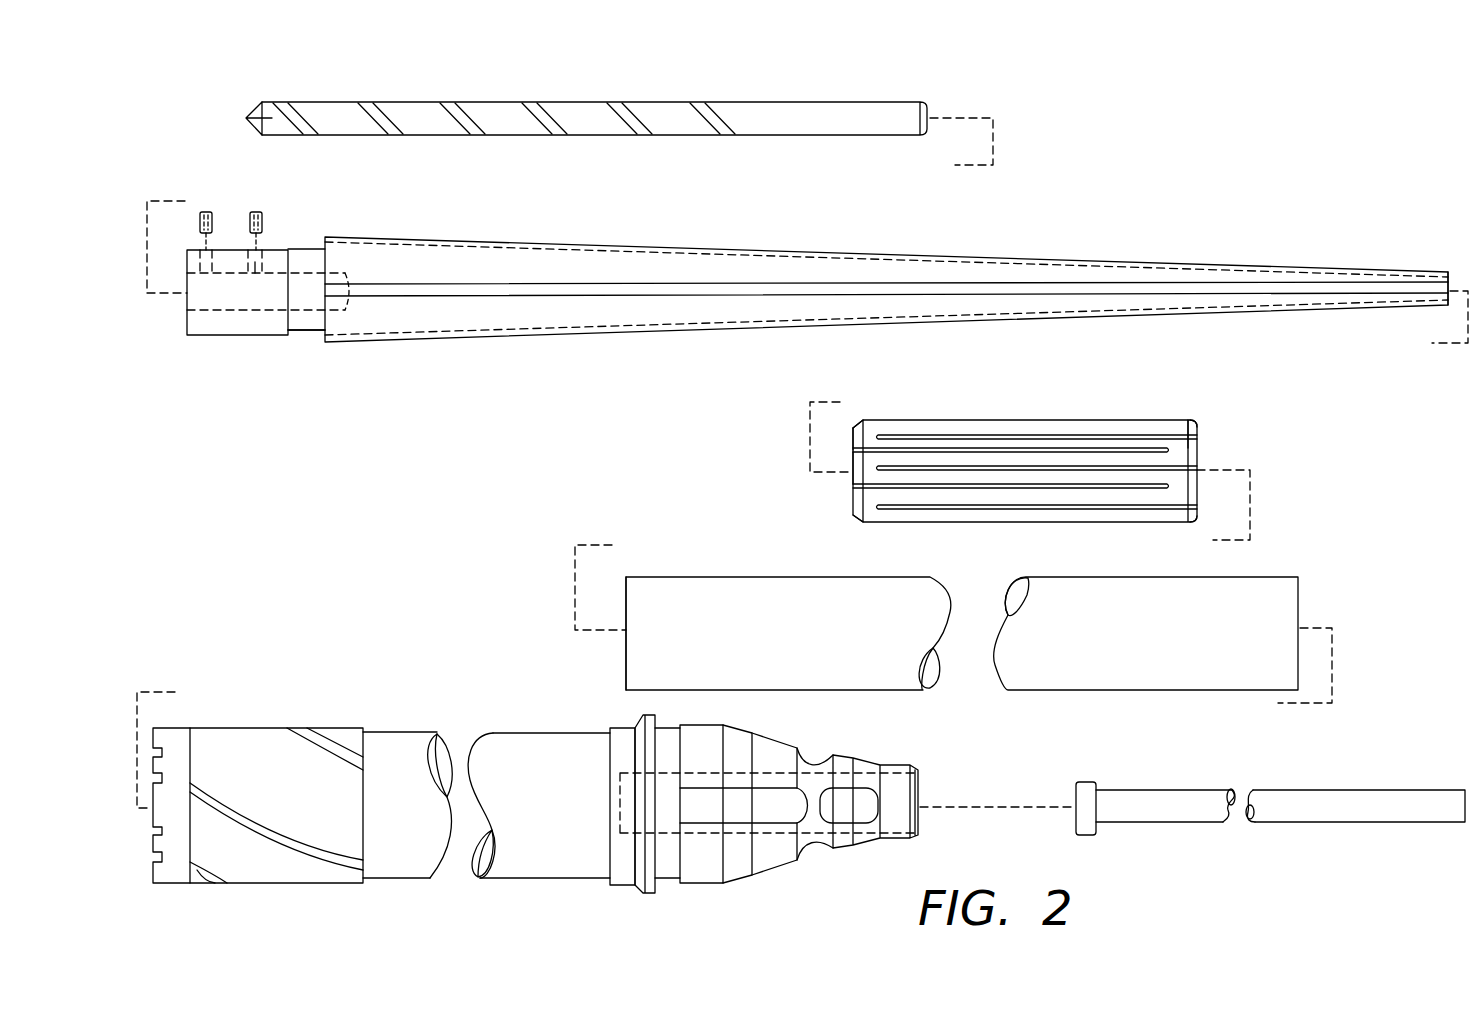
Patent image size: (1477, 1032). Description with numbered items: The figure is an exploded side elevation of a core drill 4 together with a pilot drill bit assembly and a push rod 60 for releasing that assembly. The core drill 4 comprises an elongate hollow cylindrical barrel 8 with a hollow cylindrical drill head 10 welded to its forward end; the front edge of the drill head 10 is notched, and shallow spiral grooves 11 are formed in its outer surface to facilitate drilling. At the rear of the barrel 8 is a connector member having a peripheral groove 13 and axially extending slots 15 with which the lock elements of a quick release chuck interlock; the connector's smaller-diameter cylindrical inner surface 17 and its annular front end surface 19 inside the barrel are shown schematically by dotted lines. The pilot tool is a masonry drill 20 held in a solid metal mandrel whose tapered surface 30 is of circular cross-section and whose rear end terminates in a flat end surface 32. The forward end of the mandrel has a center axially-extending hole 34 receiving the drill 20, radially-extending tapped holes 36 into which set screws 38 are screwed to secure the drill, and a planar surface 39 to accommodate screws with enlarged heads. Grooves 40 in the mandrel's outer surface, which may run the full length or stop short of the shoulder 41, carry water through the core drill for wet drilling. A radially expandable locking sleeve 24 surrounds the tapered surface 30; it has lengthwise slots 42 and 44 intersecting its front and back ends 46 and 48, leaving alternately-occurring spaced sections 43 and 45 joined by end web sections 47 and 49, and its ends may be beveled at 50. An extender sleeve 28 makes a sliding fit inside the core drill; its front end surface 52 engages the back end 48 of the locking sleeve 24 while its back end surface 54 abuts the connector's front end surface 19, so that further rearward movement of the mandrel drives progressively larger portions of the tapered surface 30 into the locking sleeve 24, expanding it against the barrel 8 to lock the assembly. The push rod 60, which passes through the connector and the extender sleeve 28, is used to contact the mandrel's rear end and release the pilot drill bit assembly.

The core drill 4 is at (375, 718).
The barrel 8 is at (397, 732).
The drill head 10 is at (233, 720).
The spiral grooves 11 is at (240, 803).
The peripheral groove 13 is at (810, 757).
The axially extending slots 15 is at (840, 805).
The cylindrical inner surface of connector 17 is at (767, 770).
The front end surface of connector 19 is at (617, 793).
The masonry drill 20 is at (624, 100).
The locking sleeve 24 is at (995, 408).
The extender sleeve 28 is at (614, 642).
The tapered surface 30 is at (650, 214).
The flat end surface 32 is at (1450, 272).
The center axially-extending hole 34 is at (222, 336).
The tapped holes 36 is at (290, 249).
The set screws 38 is at (250, 222).
The planar surface 39 is at (268, 250).
The grooves 40 is at (813, 250).
The shoulder 41 is at (314, 338).
The slots 42 is at (853, 455).
The sleeve sections 43 is at (1060, 458).
The slots 44 is at (1197, 440).
The sleeve sections 45 is at (983, 480).
The front end of locking sleeve 46 is at (853, 437).
The end web section 47 is at (870, 433).
The back end of locking sleeve 48 is at (1197, 497).
The end web section 49 is at (1180, 490).
The beveled ends 50 is at (855, 522).
The front end surface of extender sleeve 52 is at (626, 600).
The back end surface of extender sleeve 54 is at (1300, 605).
The push rod 60 is at (1162, 790).